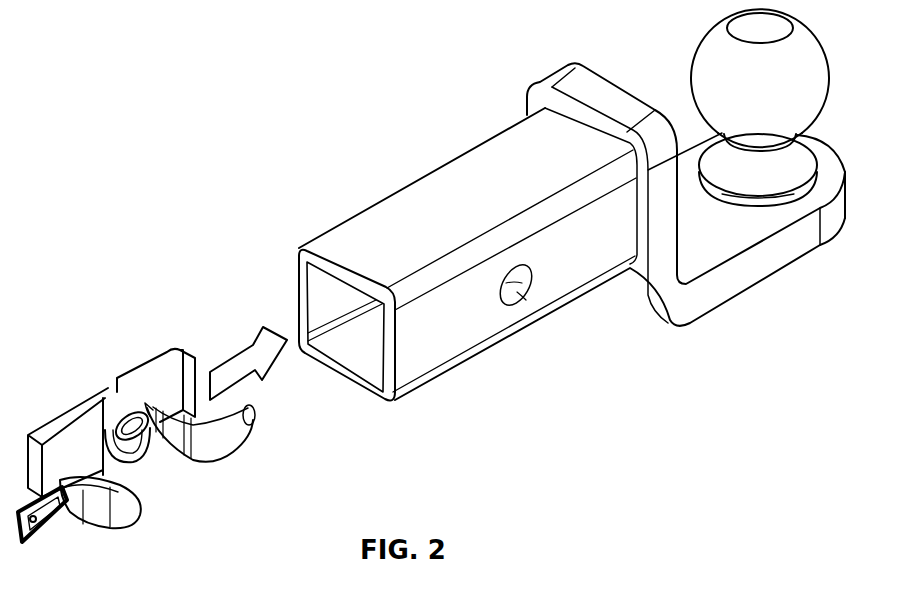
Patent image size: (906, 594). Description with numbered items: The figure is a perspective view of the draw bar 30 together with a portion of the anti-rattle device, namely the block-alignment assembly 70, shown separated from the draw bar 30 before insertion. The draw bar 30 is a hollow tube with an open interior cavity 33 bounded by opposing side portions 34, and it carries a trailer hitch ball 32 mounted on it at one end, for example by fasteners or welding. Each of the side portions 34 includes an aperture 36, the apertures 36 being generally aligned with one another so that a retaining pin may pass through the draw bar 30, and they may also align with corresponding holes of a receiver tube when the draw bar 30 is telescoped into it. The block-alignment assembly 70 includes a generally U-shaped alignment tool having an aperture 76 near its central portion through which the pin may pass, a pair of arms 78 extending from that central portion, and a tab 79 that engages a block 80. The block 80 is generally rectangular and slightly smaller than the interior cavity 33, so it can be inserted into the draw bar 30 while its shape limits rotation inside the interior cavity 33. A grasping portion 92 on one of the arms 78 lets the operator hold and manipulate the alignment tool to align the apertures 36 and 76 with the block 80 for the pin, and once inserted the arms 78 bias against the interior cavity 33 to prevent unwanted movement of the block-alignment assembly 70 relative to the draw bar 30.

The draw bar 30 is at (564, 209).
The trailer hitch ball 32 is at (713, 45).
The interior cavity 33 is at (357, 368).
The side portions 34 is at (564, 258).
The apertures 36 is at (530, 292).
The block-alignment assembly 70 is at (164, 444).
The aperture 76 is at (152, 447).
The arms 78 is at (243, 444).
The tab 79 is at (136, 405).
The block 80 is at (183, 373).
The grasping portion 92 is at (40, 518).